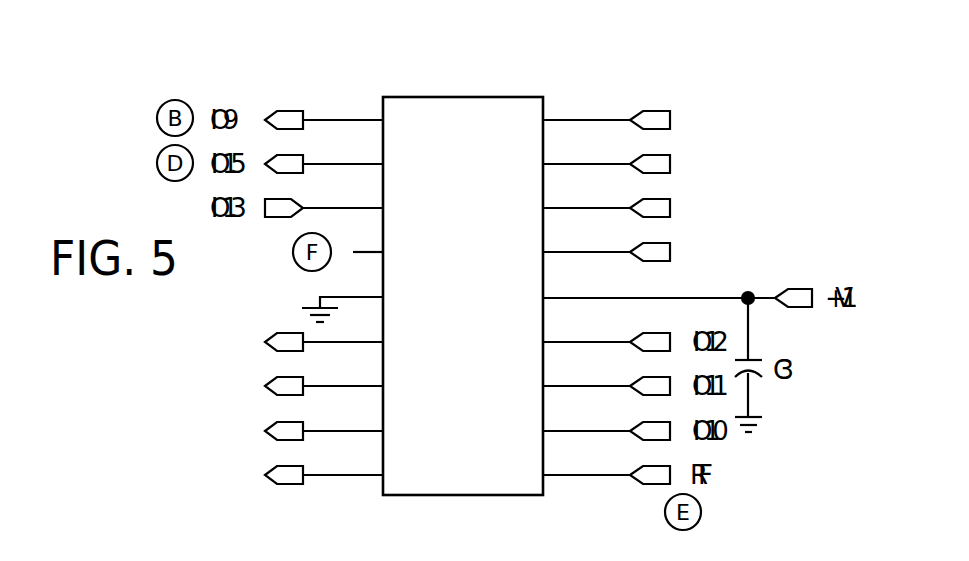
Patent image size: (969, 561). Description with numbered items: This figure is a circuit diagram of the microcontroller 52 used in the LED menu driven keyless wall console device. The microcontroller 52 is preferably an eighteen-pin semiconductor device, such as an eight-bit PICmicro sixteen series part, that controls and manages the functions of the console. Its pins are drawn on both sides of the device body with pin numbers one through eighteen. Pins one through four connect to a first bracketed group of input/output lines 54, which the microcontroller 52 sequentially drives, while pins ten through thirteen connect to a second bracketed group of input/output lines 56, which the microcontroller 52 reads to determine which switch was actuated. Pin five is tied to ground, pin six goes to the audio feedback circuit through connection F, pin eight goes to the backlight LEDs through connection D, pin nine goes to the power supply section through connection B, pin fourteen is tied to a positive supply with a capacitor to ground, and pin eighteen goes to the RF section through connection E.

The microcontroller 52 is at (520, 82).
The first group of input/output lines 54 is at (205, 318).
The second group of input/output lines 56 is at (735, 100).